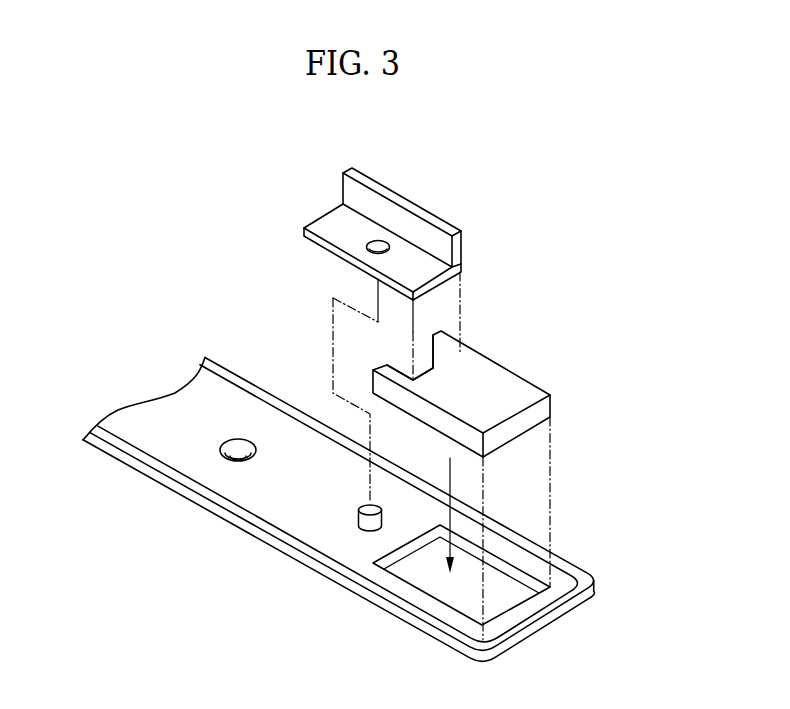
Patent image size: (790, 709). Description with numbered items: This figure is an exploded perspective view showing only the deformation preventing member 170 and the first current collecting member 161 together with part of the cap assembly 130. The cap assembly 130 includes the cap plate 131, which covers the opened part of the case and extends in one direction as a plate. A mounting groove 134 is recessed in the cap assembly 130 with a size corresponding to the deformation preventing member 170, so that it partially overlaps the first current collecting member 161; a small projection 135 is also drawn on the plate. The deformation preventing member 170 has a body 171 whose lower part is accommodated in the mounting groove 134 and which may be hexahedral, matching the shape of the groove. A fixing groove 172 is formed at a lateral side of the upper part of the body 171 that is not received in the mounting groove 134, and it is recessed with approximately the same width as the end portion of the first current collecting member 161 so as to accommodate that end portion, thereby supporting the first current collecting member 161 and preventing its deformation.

The cap assembly 130 is at (158, 492).
The cap plate 131 is at (278, 513).
The mounting groove 134 is at (468, 582).
The guide pin 135 is at (365, 530).
The first current collecting member 161 is at (418, 232).
The deformation preventing member 170 is at (508, 379).
The body 171 is at (510, 387).
The fixing groove 172 is at (424, 366).